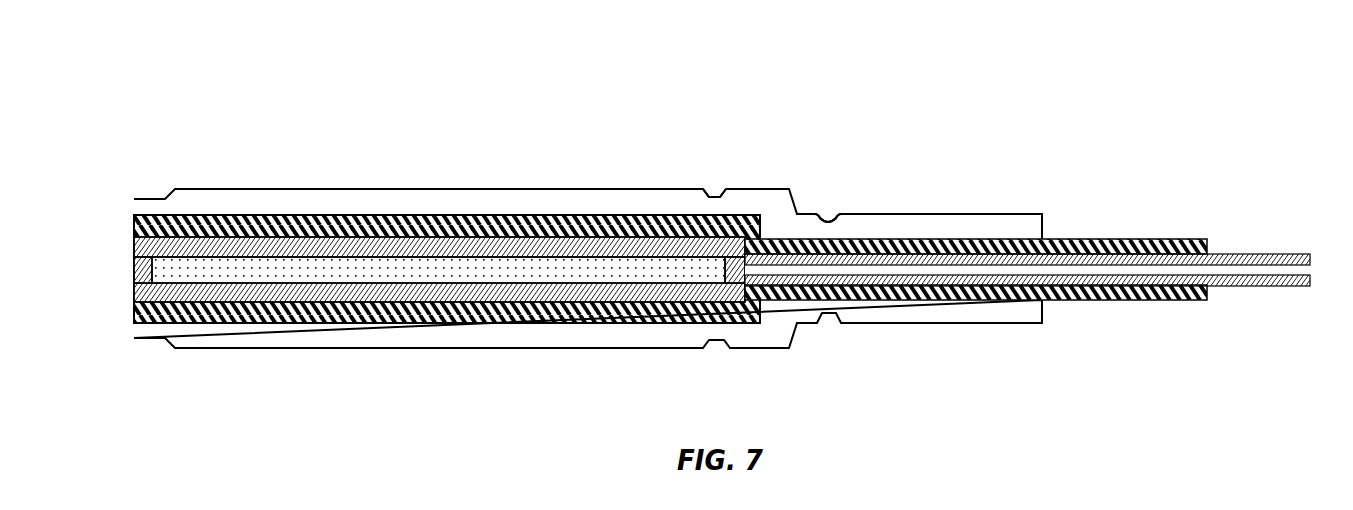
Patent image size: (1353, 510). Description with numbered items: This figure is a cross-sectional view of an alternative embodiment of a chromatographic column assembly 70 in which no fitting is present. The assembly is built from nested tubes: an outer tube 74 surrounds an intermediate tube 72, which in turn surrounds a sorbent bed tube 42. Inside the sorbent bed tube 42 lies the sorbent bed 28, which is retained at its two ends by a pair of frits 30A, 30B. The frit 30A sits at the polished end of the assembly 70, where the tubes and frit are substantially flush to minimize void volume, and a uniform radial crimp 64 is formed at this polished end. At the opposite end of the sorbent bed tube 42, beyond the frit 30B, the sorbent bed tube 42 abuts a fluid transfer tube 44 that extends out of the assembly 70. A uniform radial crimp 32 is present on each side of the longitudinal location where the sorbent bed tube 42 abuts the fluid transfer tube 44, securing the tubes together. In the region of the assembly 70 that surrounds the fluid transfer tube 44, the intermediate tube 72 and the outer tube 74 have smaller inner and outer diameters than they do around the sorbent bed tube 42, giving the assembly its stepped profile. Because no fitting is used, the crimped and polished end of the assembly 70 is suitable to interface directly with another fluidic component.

The chromatographic column assembly 70 is at (688, 220).
The uniform radial crimp 64 is at (588, 271).
The outer tube 74 is at (245, 348).
The intermediate tube 72 is at (413, 308).
The sorbent bed tube 42 is at (406, 319).
The sorbent bed 28 is at (442, 270).
The frit 30A is at (133, 271).
The frit 30B is at (725, 278).
The uniform radial crimp 32 is at (718, 177).
The fluid transfer tube 44 is at (1293, 286).